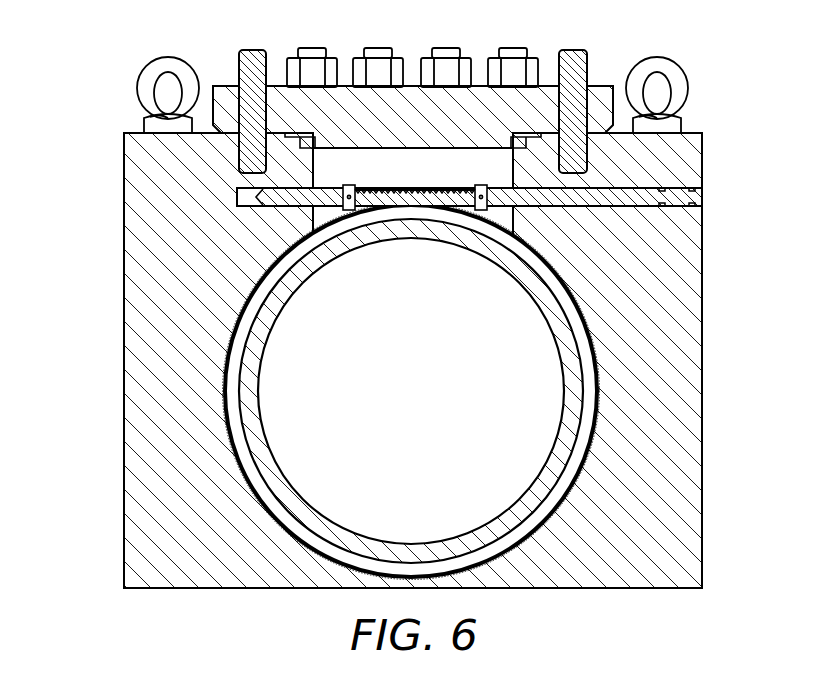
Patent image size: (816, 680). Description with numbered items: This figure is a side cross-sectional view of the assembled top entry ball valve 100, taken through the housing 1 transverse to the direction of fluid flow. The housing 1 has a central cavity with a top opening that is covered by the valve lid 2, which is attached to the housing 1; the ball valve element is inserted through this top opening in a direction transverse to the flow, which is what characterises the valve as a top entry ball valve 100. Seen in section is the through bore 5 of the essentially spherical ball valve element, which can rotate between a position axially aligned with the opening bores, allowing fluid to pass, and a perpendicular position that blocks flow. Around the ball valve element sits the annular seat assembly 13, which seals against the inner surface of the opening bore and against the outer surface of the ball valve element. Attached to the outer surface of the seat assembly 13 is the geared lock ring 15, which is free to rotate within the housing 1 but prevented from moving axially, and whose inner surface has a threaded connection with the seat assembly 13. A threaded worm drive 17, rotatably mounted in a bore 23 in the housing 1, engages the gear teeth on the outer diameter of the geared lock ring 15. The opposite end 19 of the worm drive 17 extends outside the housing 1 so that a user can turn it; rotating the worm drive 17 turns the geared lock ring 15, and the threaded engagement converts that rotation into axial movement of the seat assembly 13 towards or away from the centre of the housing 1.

The top entry ball valve 100 is at (127, 43).
The housing 1 is at (124, 281).
The valve lid 2 is at (345, 95).
The through bore 5 is at (421, 401).
The seat assembly 13 is at (255, 350).
The geared lock ring 15 is at (573, 342).
The threaded worm drive 17 is at (413, 207).
The opposite end of worm drive 19 is at (700, 194).
The bore 23 is at (237, 199).